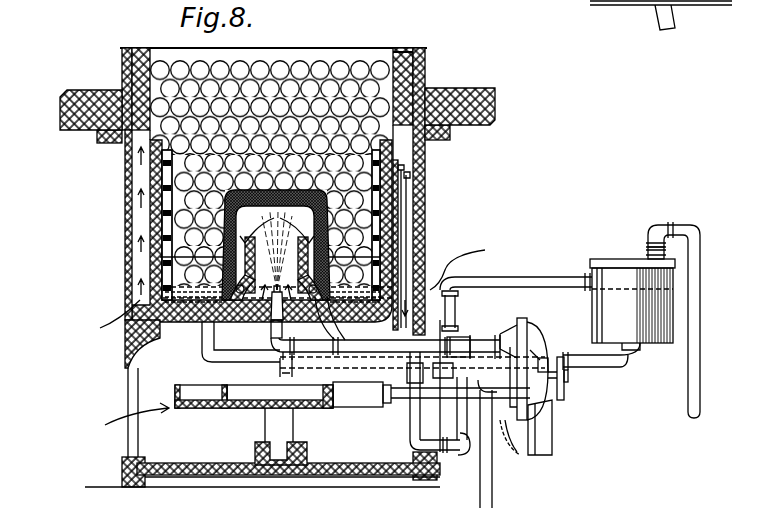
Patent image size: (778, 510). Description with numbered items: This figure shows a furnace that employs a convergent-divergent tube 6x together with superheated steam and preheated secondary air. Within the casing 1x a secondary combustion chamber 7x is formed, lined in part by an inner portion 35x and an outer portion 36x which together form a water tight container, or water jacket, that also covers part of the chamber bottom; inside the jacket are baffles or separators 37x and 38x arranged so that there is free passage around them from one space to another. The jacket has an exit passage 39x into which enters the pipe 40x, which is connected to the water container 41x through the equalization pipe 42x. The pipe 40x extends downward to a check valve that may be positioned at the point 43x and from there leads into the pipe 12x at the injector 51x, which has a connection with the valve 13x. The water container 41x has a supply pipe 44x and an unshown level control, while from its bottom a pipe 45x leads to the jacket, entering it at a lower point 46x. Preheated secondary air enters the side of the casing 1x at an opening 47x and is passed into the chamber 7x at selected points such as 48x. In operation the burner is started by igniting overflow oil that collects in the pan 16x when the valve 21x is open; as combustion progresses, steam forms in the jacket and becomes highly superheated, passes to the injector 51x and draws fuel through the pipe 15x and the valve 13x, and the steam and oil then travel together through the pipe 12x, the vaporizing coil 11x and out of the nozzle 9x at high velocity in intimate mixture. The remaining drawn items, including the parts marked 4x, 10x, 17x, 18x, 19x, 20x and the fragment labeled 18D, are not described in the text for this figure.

The casing 1x is at (127, 182).
The furnace top wall 4x is at (410, 52).
The tube 6x is at (252, 323).
The secondary combustion chamber 7x is at (284, 72).
The nozzle 9x is at (270, 324).
The tray 10x is at (278, 398).
The vaporizing coil 11x is at (170, 297).
The pipe 12x is at (376, 347).
The valve 13x is at (531, 337).
The pipe 15x is at (493, 492).
The pan 16x is at (226, 411).
The base plate 17x is at (224, 467).
The drain pipe 18x is at (497, 425).
The block 19x is at (547, 446).
The valve stem gland 20x is at (538, 362).
The valve 21x is at (561, 395).
The inner portion 35x is at (168, 197).
The outer portion 36x is at (158, 248).
The baffle 37x is at (405, 246).
The baffle 38x is at (410, 252).
The exit passage 39x is at (416, 163).
The pipe 40x is at (408, 316).
The water container 41x is at (612, 262).
The equalization pipe 42x is at (532, 280).
The check valve position 43x is at (430, 450).
The supply pipe 44x is at (692, 318).
The pipe 45x is at (257, 364).
The jacket lower entry point 46x is at (128, 364).
The opening 47x is at (120, 295).
The air entry points 48x is at (432, 118).
The injector 51x is at (464, 344).
The adjacent figure fragment 18D is at (565, 0).